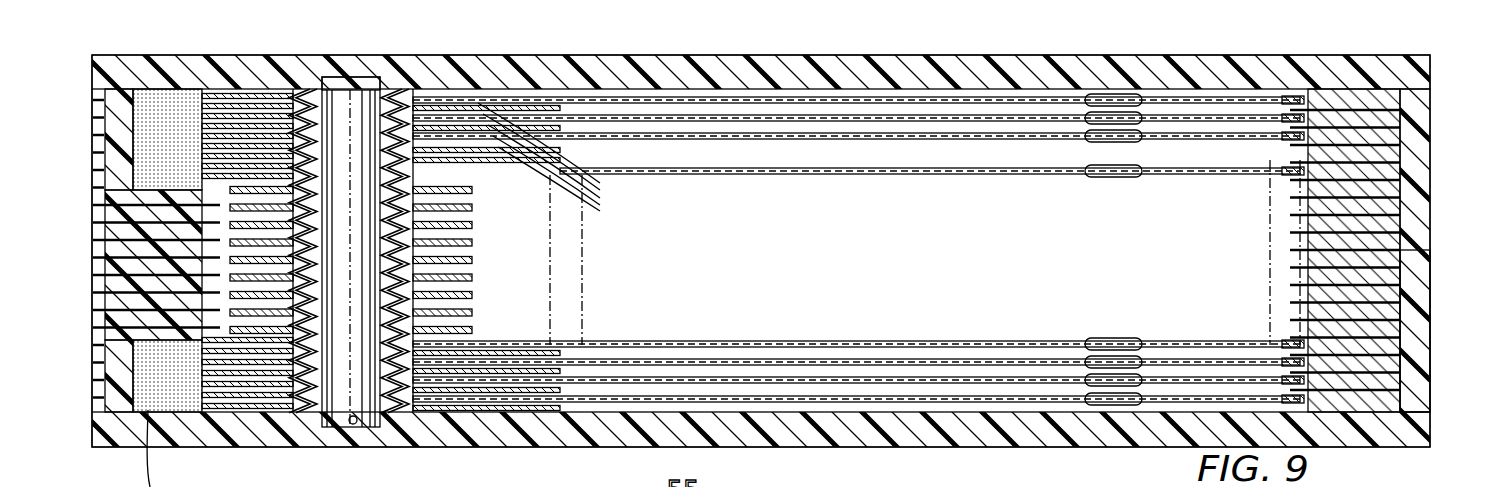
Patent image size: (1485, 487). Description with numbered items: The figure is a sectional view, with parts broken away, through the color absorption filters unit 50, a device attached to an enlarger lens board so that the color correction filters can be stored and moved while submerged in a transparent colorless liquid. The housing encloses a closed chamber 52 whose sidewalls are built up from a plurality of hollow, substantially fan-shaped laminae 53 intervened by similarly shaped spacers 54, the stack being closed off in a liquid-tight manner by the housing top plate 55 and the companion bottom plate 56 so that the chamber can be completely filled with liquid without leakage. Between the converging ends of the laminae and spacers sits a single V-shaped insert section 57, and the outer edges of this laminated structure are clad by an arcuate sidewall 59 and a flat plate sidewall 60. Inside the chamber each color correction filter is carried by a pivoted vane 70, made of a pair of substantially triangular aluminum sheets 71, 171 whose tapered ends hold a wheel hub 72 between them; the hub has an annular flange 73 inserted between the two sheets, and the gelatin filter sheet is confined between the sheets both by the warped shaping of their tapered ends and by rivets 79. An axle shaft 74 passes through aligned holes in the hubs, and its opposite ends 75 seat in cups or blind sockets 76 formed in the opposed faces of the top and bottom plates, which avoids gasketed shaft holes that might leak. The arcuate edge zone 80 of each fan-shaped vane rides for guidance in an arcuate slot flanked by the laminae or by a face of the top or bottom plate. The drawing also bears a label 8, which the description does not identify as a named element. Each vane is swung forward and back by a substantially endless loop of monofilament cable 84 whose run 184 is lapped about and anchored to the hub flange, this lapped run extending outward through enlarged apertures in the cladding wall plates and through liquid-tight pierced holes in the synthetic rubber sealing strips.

The color absorption filters unit 50 is at (1361, 456).
The closed chamber 52 is at (905, 266).
The fan-shaped laminae 53 is at (1353, 107).
The spacers 54 is at (1390, 117).
The housing top plate 55 is at (1112, 47).
The bottom plate 56 is at (1030, 436).
The V-shaped insert section 57 is at (188, 408).
The arcuate sidewall 59 is at (1422, 373).
The flat plate sidewall 60 is at (127, 107).
The pivoted vane 70 is at (1172, 100).
The triangular sheet 71 is at (532, 97).
The wheel hub 72 is at (396, 105).
The annular flange 73 is at (452, 100).
The axle shaft 74 is at (339, 121).
The shaft ends 75 is at (350, 97).
The blind sockets 76 is at (353, 428).
The rivets 79 is at (1100, 100).
The arcuate edge zone 80 is at (1302, 98).
The terminal pins 8 is at (1310, 100).
The monofilament cable loop 84 is at (92, 228).
The triangular sheet 171 is at (543, 100).
The lapped run 184 is at (568, 163).